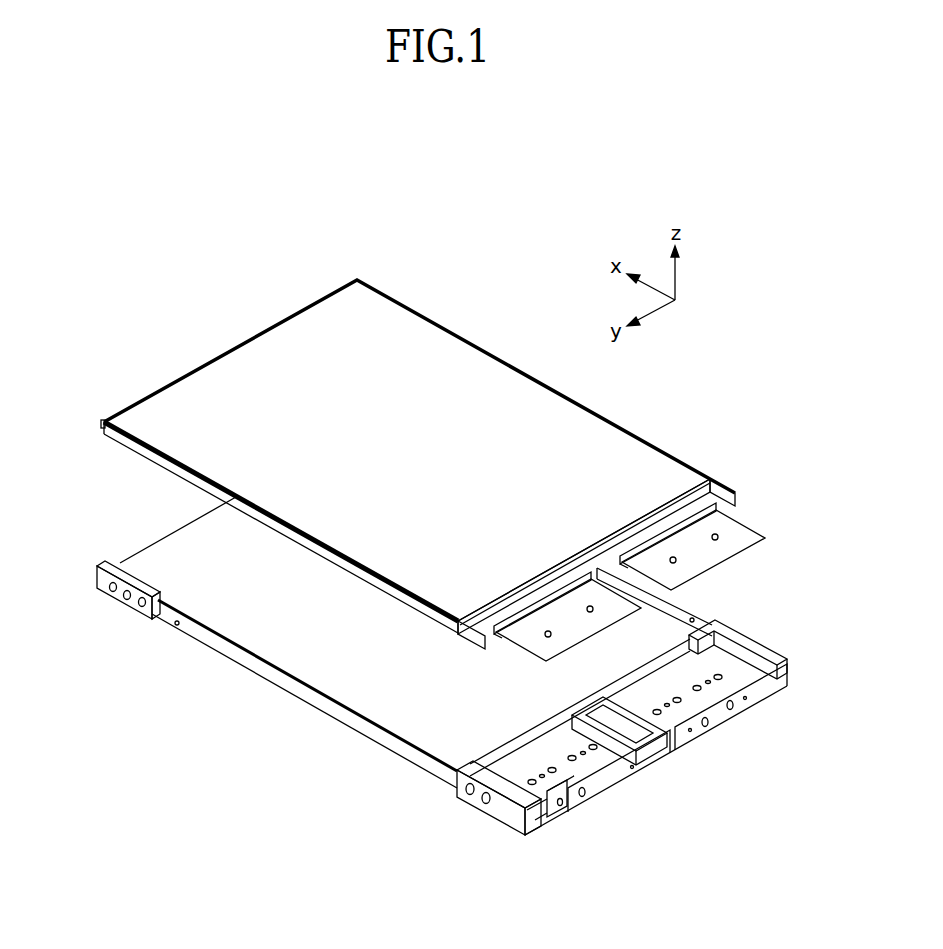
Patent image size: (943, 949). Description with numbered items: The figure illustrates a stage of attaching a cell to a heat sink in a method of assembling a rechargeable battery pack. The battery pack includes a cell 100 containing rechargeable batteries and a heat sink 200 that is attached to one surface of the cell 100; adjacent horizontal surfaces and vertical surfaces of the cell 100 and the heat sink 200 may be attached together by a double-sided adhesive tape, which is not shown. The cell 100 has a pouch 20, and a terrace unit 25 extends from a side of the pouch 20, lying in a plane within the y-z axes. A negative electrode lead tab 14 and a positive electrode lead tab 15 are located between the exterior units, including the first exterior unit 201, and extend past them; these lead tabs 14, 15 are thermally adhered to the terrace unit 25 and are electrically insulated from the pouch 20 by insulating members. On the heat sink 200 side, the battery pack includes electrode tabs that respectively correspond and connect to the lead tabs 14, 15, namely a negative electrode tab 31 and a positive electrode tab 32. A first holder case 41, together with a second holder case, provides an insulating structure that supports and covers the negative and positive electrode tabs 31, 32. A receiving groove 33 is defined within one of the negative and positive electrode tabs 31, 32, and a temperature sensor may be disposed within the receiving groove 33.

The cell 100 is at (409, 448).
The pouch 20 is at (452, 357).
The first exterior unit 201 is at (103, 420).
The terrace unit 25 is at (603, 557).
The negative electrode lead tab 14 is at (737, 532).
The positive electrode lead tab 15 is at (530, 643).
The heat sink 200 is at (443, 681).
The negative electrode tab 31 is at (723, 717).
The positive electrode tab 32 is at (600, 784).
The receiving groove 33 is at (573, 790).
The first holder case 41 is at (748, 653).